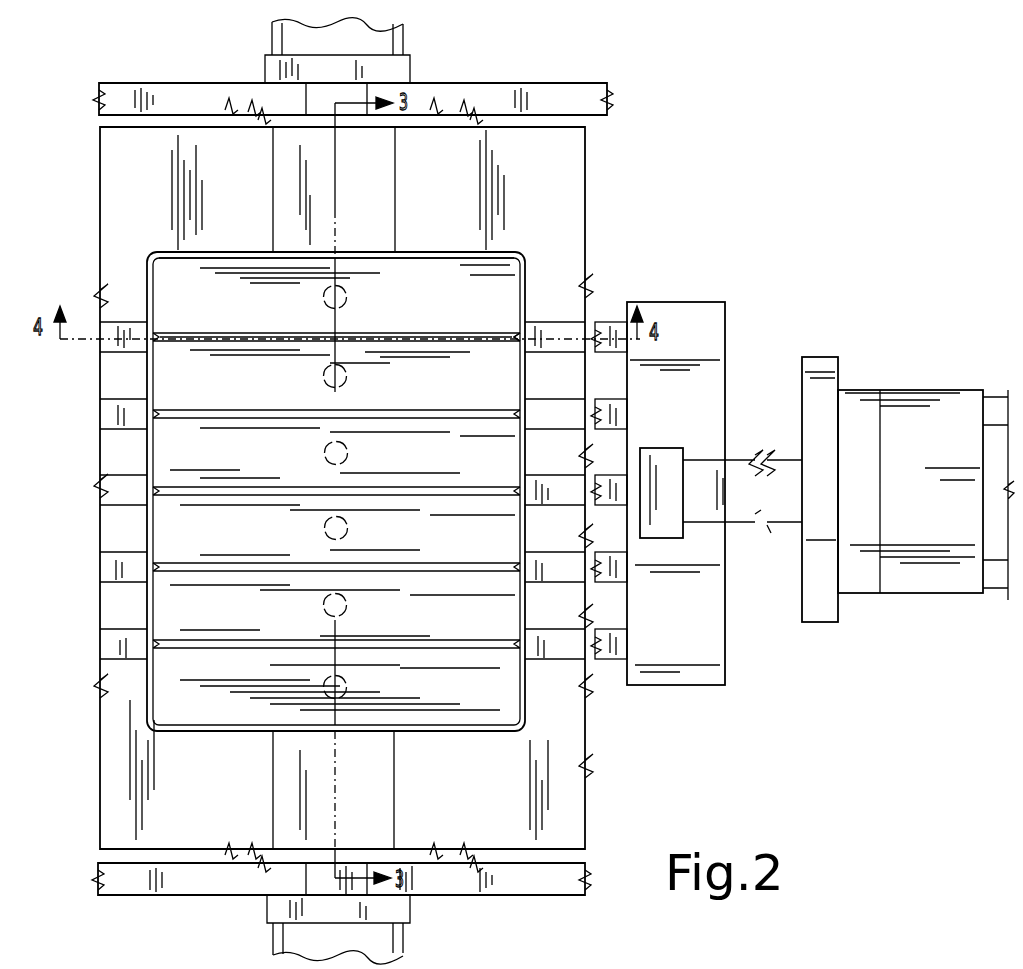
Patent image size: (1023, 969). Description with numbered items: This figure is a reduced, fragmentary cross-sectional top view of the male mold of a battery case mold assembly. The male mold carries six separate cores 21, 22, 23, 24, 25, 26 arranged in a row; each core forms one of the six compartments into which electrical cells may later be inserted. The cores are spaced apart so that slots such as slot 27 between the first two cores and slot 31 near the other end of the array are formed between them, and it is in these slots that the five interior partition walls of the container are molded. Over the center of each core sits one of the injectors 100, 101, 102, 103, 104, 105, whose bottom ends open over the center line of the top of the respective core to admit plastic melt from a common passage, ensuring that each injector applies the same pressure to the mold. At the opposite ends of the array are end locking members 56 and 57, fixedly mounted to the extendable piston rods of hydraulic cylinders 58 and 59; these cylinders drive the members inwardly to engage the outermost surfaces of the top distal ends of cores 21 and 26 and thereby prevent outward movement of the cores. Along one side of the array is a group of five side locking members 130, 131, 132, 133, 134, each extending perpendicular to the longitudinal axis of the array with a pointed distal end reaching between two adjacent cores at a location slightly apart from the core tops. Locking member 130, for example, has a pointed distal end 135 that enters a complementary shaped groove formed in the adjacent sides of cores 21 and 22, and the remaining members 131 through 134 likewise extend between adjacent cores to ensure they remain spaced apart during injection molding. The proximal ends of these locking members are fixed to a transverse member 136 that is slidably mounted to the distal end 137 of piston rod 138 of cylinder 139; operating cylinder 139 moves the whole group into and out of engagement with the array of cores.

The core 21 is at (443, 303).
The core 22 is at (443, 392).
The core 23 is at (443, 467).
The core 24 is at (443, 543).
The core 25 is at (443, 621).
The core 26 is at (443, 699).
The slot 27 is at (388, 338).
The slot 31 is at (342, 645).
The end locking member 56 is at (372, 185).
The end locking member 57 is at (370, 810).
The hydraulic cylinder 58 is at (410, 46).
The hydraulic cylinder 59 is at (410, 915).
The injector 100 is at (324, 298).
The injector 101 is at (324, 377).
The injector 102 is at (324, 454).
The injector 103 is at (324, 529).
The injector 104 is at (324, 606).
The injector 105 is at (324, 688).
The side locking member 130 is at (615, 322).
The side locking member 131 is at (615, 399).
The side locking member 132 is at (615, 475).
The side locking member 133 is at (615, 552).
The side locking member 134 is at (615, 629).
The pointed distal end 135 is at (516, 334).
The transverse member 136 is at (720, 325).
The distal end of piston rod 137 is at (676, 452).
The piston rod 138 is at (740, 465).
The cylinder 139 is at (909, 395).